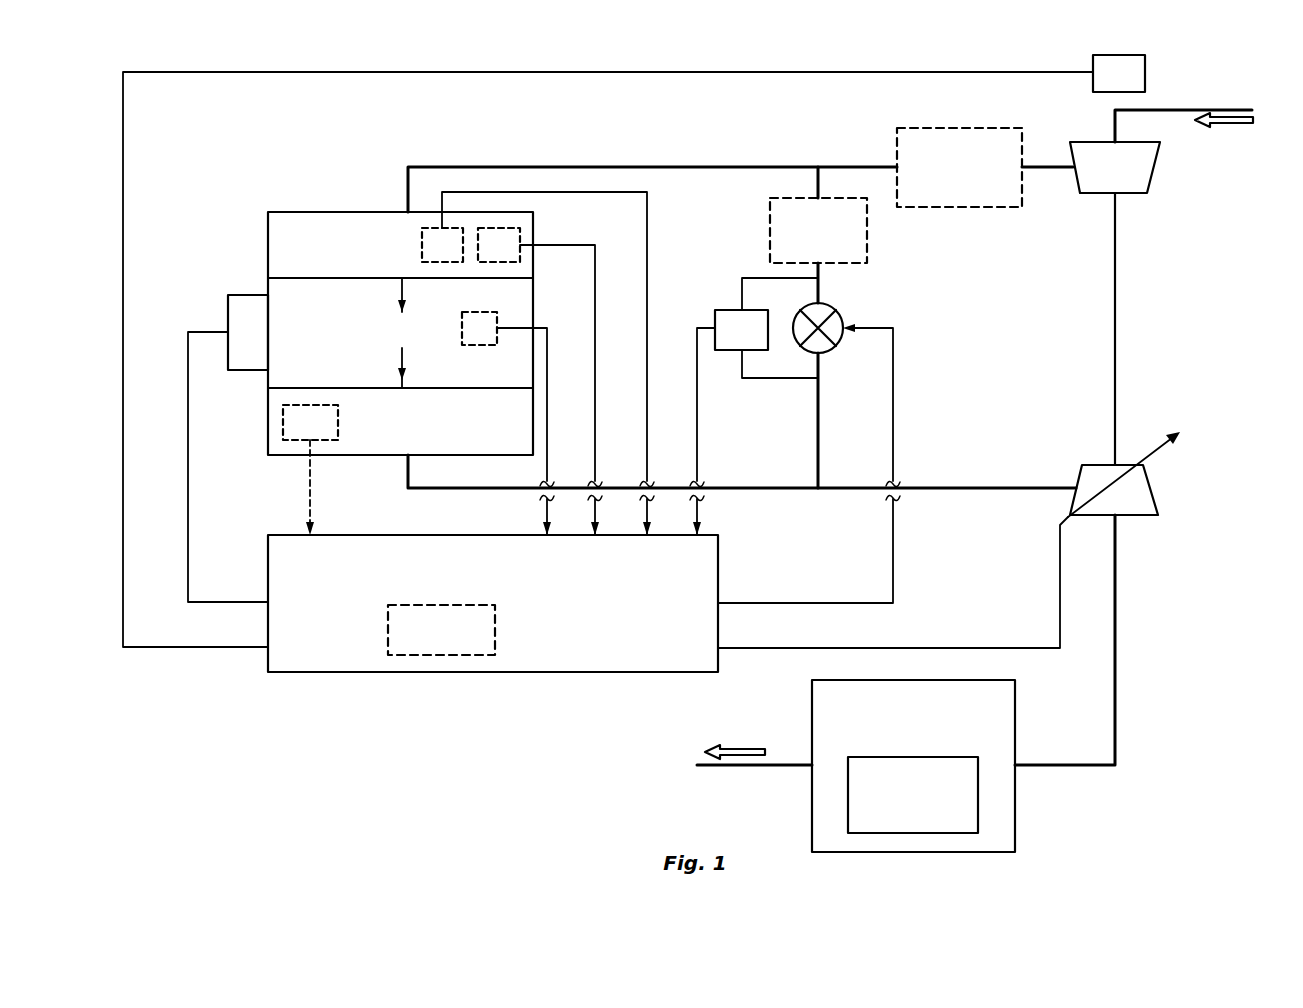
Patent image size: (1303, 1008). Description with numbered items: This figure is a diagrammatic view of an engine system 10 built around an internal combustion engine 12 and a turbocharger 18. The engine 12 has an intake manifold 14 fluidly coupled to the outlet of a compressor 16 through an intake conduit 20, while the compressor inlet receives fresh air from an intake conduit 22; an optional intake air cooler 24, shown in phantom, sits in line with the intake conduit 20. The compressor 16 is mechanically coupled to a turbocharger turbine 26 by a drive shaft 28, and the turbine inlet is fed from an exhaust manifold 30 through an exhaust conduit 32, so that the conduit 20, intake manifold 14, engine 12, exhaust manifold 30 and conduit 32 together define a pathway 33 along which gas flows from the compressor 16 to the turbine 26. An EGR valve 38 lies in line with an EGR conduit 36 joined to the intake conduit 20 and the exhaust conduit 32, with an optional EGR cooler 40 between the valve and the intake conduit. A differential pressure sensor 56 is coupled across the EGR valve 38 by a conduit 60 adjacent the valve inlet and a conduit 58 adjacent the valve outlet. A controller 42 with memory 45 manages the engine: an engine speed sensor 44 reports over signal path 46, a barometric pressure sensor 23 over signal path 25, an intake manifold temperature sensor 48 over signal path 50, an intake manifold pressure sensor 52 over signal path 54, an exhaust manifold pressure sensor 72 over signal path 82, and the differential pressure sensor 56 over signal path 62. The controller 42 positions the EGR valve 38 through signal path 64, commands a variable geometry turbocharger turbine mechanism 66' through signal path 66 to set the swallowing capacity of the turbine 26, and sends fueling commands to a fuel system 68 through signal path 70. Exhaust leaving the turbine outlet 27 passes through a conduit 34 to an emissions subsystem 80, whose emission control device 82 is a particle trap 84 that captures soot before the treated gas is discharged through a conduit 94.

The engine system 10 is at (300, 166).
The internal combustion engine 12 is at (268, 280).
The intake manifold 14 is at (355, 212).
The compressor 16 is at (1150, 175).
The turbocharger 18 is at (1140, 300).
The intake conduit 20 is at (690, 167).
The intake conduit 22 is at (1112, 126).
The barometric pressure sensor 23 is at (1147, 73).
The intake air cooler 24 is at (958, 210).
The signal path 25 is at (123, 436).
The turbocharger turbine 26 is at (1157, 488).
The turbine outlet 27 is at (1118, 525).
The drive shaft 28 is at (1112, 330).
The exhaust manifold 30 is at (345, 456).
The exhaust conduit 32 is at (480, 492).
The pathway 33 is at (533, 167).
The conduit 34 is at (1115, 637).
The EGR conduit 36 is at (820, 450).
The EGR valve 38 is at (838, 310).
The EGR cooler 40 is at (869, 230).
The controller 42 is at (345, 673).
The engine speed sensor 44 is at (478, 348).
The memory 45 is at (497, 632).
The signal path 46 is at (547, 430).
The intake manifold temperature sensor 48 is at (522, 228).
The signal path 50 is at (560, 248).
The intake manifold pressure sensor 52 is at (455, 228).
The signal path 54 is at (647, 235).
The differential pressure sensor 56 is at (722, 310).
The conduit 58 is at (752, 278).
The conduit 60 is at (790, 380).
The signal path 62 is at (697, 405).
The signal path 64 is at (893, 395).
The signal path 66 is at (893, 582).
The variable geometry turbocharger turbine mechanism 66' is at (1124, 456).
The fuel system 68 is at (245, 370).
The signal path 70 is at (188, 470).
The exhaust manifold pressure sensor 72 is at (283, 428).
The emissions subsystem 80 is at (1017, 708).
The signal path / emission control device 82 is at (310, 488).
The particle trap 84 is at (870, 834).
The conduit 94 is at (715, 768).